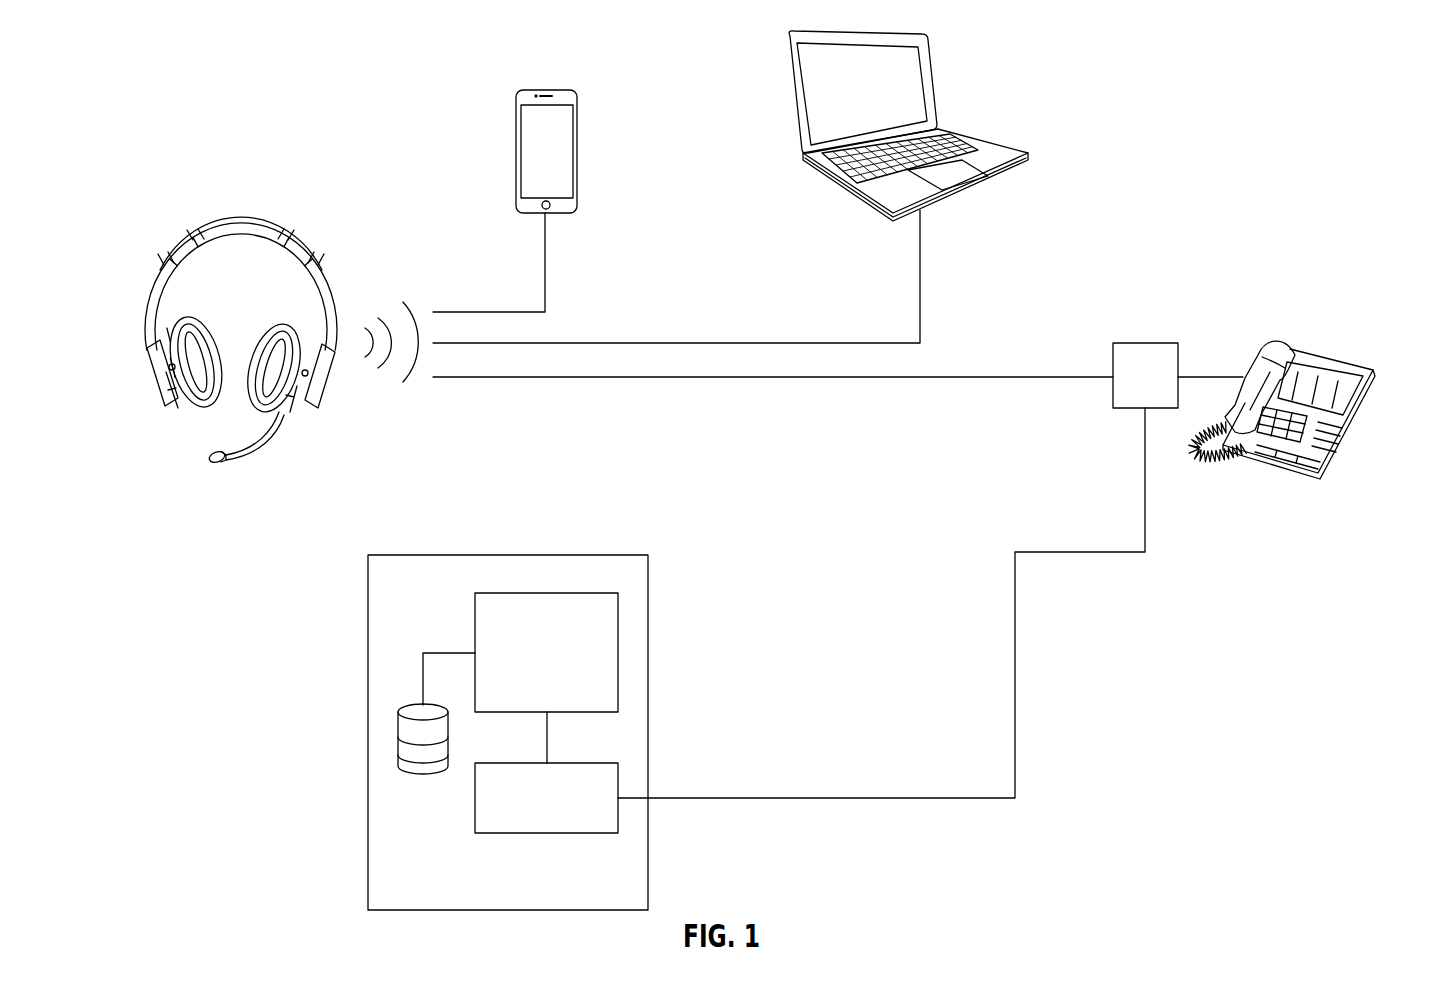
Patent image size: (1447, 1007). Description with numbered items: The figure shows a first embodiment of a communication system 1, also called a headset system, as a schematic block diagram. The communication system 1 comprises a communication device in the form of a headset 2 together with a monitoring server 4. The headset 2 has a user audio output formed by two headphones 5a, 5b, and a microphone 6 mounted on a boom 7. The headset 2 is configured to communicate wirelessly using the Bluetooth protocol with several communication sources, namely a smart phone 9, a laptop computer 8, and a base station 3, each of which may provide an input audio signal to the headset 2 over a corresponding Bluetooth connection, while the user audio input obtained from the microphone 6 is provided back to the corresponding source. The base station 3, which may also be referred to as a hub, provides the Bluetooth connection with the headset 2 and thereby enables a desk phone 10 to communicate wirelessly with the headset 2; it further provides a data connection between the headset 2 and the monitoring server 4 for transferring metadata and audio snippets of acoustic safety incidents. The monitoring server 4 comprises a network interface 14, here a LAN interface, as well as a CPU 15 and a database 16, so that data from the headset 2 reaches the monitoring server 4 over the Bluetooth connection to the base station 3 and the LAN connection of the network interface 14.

The communication system 1 is at (139, 147).
The headset 2 is at (237, 229).
The headphone 5a is at (166, 380).
The headphone 5b is at (307, 392).
The microphone 6 is at (213, 462).
The boom 7 is at (278, 431).
The smart phone 9 is at (579, 159).
The laptop computer 8 is at (933, 78).
The base station 3 is at (1148, 343).
The desk phone 10 is at (1375, 378).
The network interface 14 is at (521, 763).
The monitoring server 4 is at (410, 555).
The CPU 15 is at (520, 593).
The database 16 is at (398, 740).